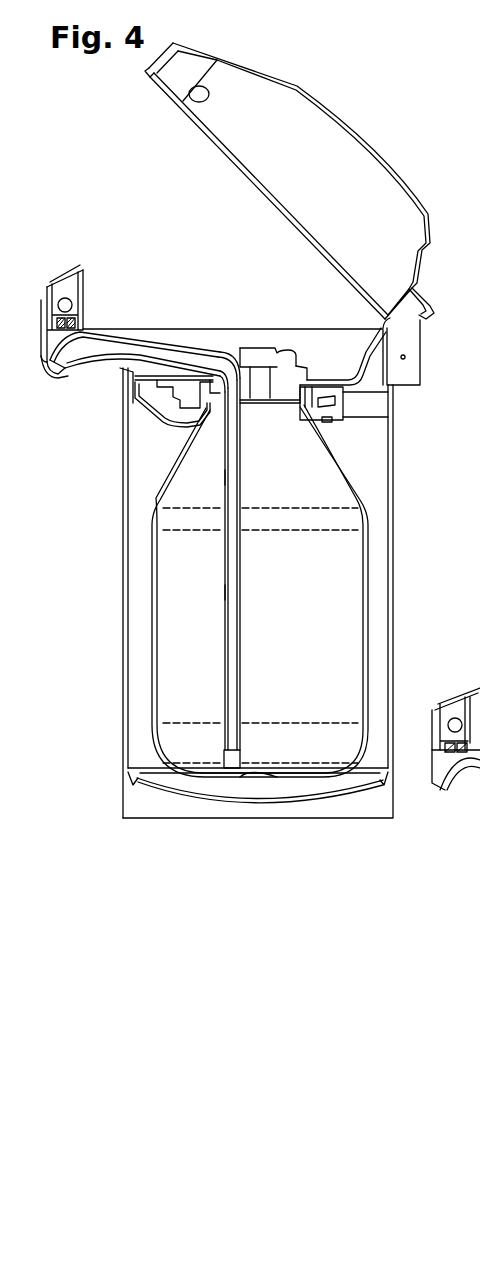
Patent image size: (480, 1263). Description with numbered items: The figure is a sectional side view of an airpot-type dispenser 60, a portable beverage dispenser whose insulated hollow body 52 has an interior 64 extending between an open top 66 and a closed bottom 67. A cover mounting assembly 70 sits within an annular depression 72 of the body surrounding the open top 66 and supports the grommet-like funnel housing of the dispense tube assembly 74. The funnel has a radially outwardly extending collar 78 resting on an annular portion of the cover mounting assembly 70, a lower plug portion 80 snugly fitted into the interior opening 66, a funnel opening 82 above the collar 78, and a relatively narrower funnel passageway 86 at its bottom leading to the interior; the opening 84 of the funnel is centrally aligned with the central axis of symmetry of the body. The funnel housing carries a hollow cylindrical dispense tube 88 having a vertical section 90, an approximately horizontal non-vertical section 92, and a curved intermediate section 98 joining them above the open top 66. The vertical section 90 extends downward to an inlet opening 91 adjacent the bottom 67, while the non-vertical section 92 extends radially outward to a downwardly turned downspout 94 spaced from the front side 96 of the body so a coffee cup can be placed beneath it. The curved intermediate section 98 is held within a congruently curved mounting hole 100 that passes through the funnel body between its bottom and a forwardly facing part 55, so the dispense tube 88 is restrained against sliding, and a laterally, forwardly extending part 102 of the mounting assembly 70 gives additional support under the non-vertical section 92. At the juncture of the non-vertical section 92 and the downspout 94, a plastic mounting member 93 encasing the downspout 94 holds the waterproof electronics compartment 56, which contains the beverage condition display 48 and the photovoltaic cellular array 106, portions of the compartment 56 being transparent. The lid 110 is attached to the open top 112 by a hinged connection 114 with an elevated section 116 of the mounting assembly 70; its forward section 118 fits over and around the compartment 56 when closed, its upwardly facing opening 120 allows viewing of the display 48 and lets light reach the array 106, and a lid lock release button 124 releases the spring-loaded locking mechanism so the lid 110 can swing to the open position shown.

The beverage condition display 48 is at (68, 280).
The insulated hollow body 52 is at (377, 552).
The forwardly facing part of the funnel 55 is at (236, 358).
The waterproof electronics compartment 56 is at (85, 288).
The airpot-type dispenser 60 is at (130, 208).
The interior 64 is at (350, 643).
The open top 66 is at (287, 405).
The closed bottom 67 is at (290, 777).
The cover mounting assembly 70 is at (163, 388).
The annular depression 72 is at (173, 397).
The dispense tube assembly 74 is at (213, 476).
The collar 78 is at (303, 373).
The lower plug portion 80 is at (350, 400).
The funnel opening 82 is at (278, 362).
The opening 84 is at (254, 357).
The funnel passageway 86 is at (280, 418).
The dispense tube 88 is at (213, 592).
The vertical section 90 is at (233, 677).
The inlet opening 91 is at (233, 770).
The non-vertical section 92 is at (93, 340).
The plastic mounting member 93 is at (53, 338).
The downspout 94 is at (58, 372).
The front side 96 is at (123, 532).
The curved intermediate section 98 is at (220, 358).
The mounting hole 100 is at (231, 349).
The outwardly extending part 102 is at (112, 367).
The photovoltaic cellular array 106 is at (75, 277).
The cover 110 is at (355, 132).
The open top 112 is at (390, 322).
The hinged connection 114 is at (388, 331).
The elevated section 116 is at (388, 368).
The forward section 118 is at (142, 67).
The upwardly facing opening 120 is at (195, 54).
The lid lock release button 124 is at (198, 100).